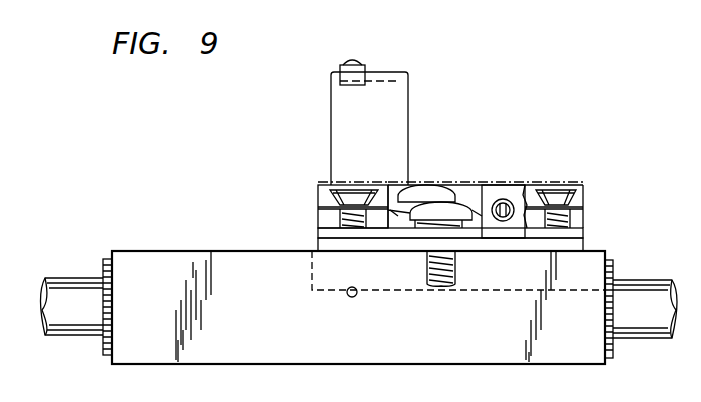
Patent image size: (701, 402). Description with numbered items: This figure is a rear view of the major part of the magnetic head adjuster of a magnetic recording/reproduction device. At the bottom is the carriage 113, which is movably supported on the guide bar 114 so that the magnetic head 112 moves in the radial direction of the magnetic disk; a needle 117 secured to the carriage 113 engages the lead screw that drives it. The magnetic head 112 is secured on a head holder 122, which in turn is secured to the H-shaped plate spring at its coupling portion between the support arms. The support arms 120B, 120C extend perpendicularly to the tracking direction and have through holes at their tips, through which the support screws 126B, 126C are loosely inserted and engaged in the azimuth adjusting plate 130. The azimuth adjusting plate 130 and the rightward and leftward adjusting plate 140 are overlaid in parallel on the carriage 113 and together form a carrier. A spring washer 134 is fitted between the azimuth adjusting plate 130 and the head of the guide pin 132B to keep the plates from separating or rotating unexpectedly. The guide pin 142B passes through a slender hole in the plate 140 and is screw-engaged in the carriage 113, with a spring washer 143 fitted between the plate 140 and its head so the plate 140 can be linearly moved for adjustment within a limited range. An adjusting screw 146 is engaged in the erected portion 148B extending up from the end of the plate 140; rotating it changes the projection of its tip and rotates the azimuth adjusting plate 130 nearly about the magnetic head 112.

The magnetic head 112 is at (357, 70).
The carriage 113 is at (578, 360).
The guide bar 114 is at (645, 340).
The needle 117 is at (347, 298).
The support arm 120B is at (592, 191).
The support arm 120C is at (320, 185).
The head holder 122 is at (397, 78).
The support screw 126B is at (570, 200).
The support screw 126C is at (347, 190).
The azimuth adjusting plate 130 is at (580, 231).
The guide pin 132B is at (431, 188).
The spring washer 134 is at (388, 236).
The rightward and leftward adjusting plate 140 is at (580, 245).
The guide pin 142B is at (458, 206).
The spring washer 143 is at (416, 240).
The adjusting screw 146 is at (503, 199).
The erected portion 148B is at (532, 185).